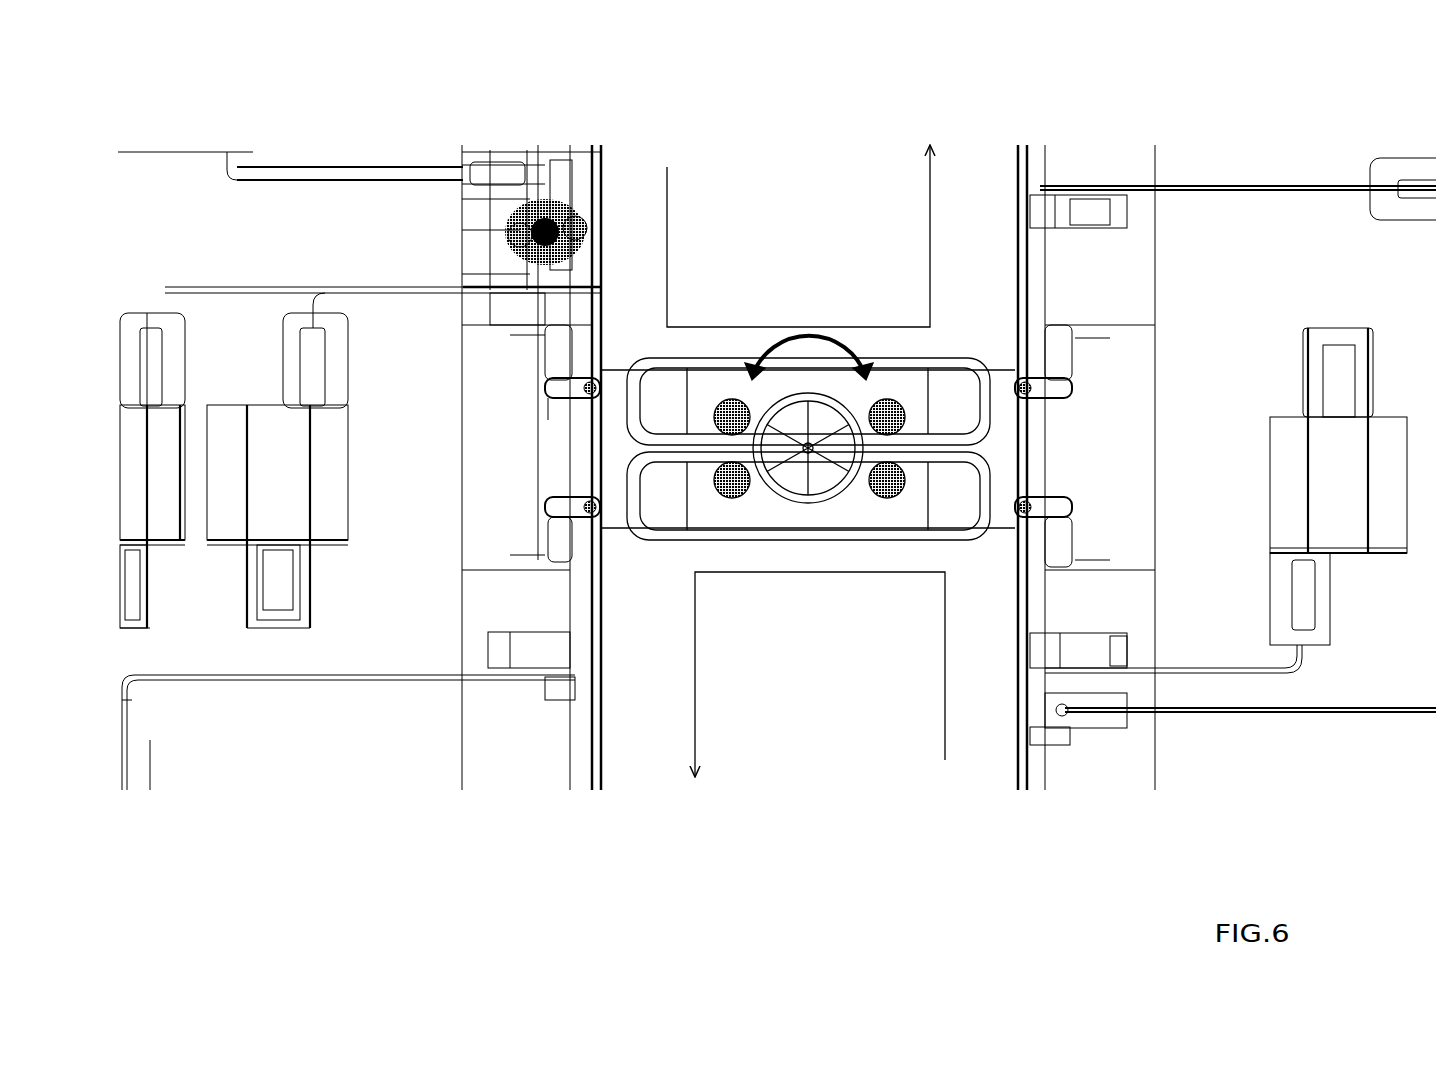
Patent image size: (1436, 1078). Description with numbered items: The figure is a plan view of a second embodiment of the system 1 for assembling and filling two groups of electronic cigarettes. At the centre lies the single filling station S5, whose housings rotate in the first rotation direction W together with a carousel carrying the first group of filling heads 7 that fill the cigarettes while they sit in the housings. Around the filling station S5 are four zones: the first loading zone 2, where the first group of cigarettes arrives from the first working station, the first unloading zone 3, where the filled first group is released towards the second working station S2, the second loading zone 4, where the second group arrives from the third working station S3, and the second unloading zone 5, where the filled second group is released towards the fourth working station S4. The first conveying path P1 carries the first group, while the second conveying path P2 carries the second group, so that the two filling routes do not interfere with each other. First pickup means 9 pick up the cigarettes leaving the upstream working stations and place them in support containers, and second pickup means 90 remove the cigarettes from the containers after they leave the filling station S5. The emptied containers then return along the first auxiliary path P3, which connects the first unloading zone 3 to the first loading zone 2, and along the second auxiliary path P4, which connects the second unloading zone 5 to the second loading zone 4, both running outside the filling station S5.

The system 1 is at (807, 328).
The first loading zone 2 is at (710, 390).
The first unloading zone 3 is at (906, 410).
The second loading zone 4 is at (895, 510).
The second unloading zone 5 is at (732, 510).
The first group of filling heads 7 is at (855, 497).
The first pickup means 9 is at (553, 380).
The second pickup means 90 is at (557, 530).
The first conveying path P1 is at (798, 236).
The second conveying path P2 is at (820, 674).
The first auxiliary path P3 is at (659, 352).
The second auxiliary path P4 is at (965, 520).
The second working station S2 is at (1017, 185).
The third working station S3 is at (1053, 635).
The fourth working station S4 is at (530, 645).
The filling station S5 is at (760, 405).
The first rotation direction W is at (809, 359).